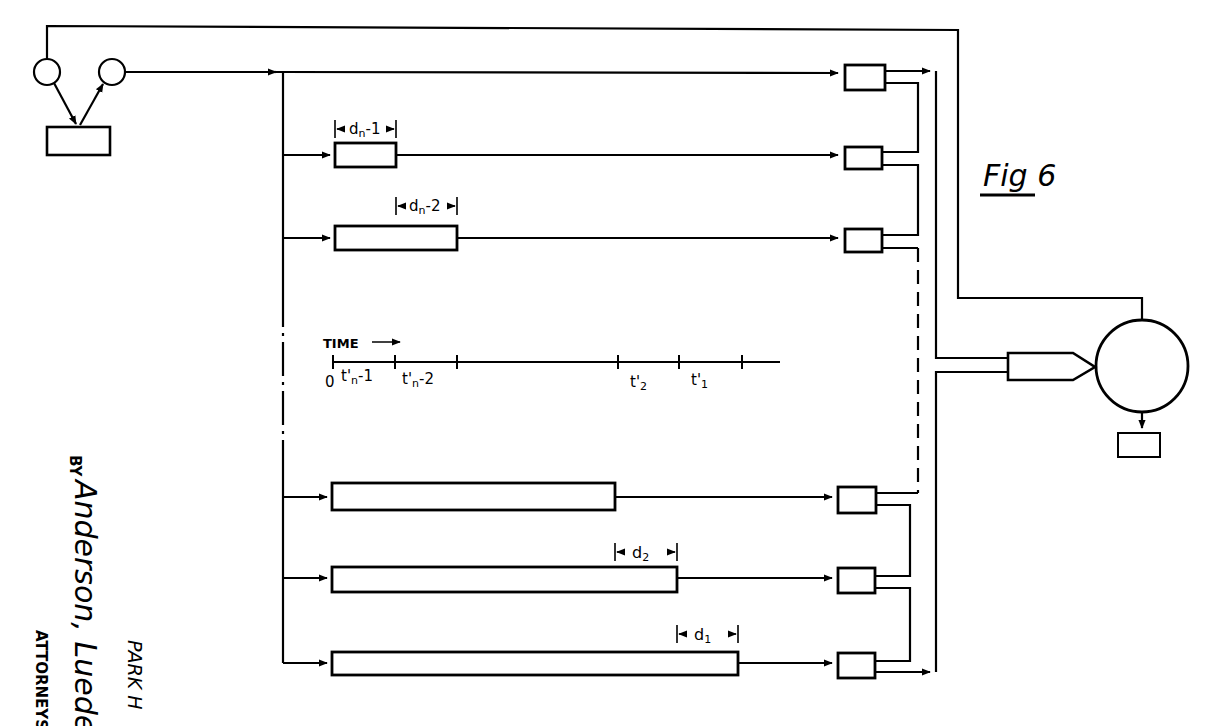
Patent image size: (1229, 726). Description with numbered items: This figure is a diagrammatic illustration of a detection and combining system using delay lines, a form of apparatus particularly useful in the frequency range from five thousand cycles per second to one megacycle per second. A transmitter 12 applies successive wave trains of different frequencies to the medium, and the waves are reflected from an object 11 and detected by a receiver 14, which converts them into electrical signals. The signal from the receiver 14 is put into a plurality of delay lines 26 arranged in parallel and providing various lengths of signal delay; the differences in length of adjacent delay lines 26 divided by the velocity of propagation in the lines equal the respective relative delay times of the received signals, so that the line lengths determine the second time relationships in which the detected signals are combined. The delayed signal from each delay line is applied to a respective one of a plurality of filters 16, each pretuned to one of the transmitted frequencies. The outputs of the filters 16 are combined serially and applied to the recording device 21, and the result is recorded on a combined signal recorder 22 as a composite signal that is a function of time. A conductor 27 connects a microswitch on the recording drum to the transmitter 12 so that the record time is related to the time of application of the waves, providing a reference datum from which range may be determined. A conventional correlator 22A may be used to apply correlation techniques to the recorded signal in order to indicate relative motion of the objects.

The object 11 is at (111, 138).
The transmitter 12 is at (57, 57).
The receiver 14 is at (122, 60).
The filters 16 is at (862, 91).
The recording device 21 is at (1045, 352).
The combined signal recorder 22 is at (1163, 327).
The correlator 22A is at (1139, 434).
The delay lines 26 is at (368, 168).
The conductor 27 is at (959, 104).